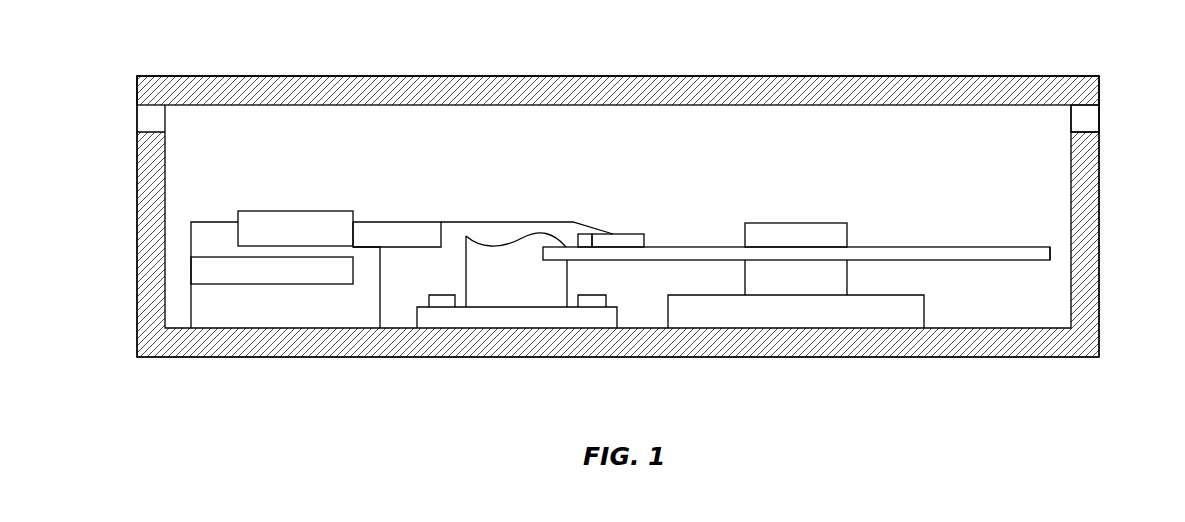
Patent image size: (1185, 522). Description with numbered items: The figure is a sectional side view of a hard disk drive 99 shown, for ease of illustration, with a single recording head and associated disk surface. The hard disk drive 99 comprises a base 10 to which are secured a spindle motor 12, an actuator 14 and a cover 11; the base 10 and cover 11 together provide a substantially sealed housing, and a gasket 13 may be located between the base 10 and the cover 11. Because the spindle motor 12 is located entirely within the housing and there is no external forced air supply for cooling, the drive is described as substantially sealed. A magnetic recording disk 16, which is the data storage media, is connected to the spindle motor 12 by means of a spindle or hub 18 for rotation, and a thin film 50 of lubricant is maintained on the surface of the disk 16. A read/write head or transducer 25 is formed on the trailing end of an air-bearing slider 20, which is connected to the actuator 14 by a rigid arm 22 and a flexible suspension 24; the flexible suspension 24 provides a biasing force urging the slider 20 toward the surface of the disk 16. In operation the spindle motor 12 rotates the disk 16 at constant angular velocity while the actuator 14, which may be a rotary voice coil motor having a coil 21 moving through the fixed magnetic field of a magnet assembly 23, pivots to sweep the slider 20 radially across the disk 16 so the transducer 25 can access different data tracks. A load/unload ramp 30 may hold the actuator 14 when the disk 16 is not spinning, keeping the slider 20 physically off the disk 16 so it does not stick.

The hard disk drive 99 is at (378, 36).
The base 10 is at (977, 345).
The cover 11 is at (167, 88).
The gasket 13 is at (1100, 118).
The actuator 14 is at (250, 315).
The coil 21 is at (253, 229).
The magnet assembly 23 is at (199, 271).
The rigid arm 22 is at (397, 230).
The flexible suspension 24 is at (467, 220).
The load/unload ramp 30 is at (532, 238).
The read/write head or transducer 25 is at (585, 235).
The air-bearing slider 20 is at (632, 235).
The spindle or hub 18 is at (798, 222).
The thin film of lubricant 50 is at (975, 247).
The magnetic recording disk 16 is at (1050, 253).
The spindle motor 12 is at (775, 315).